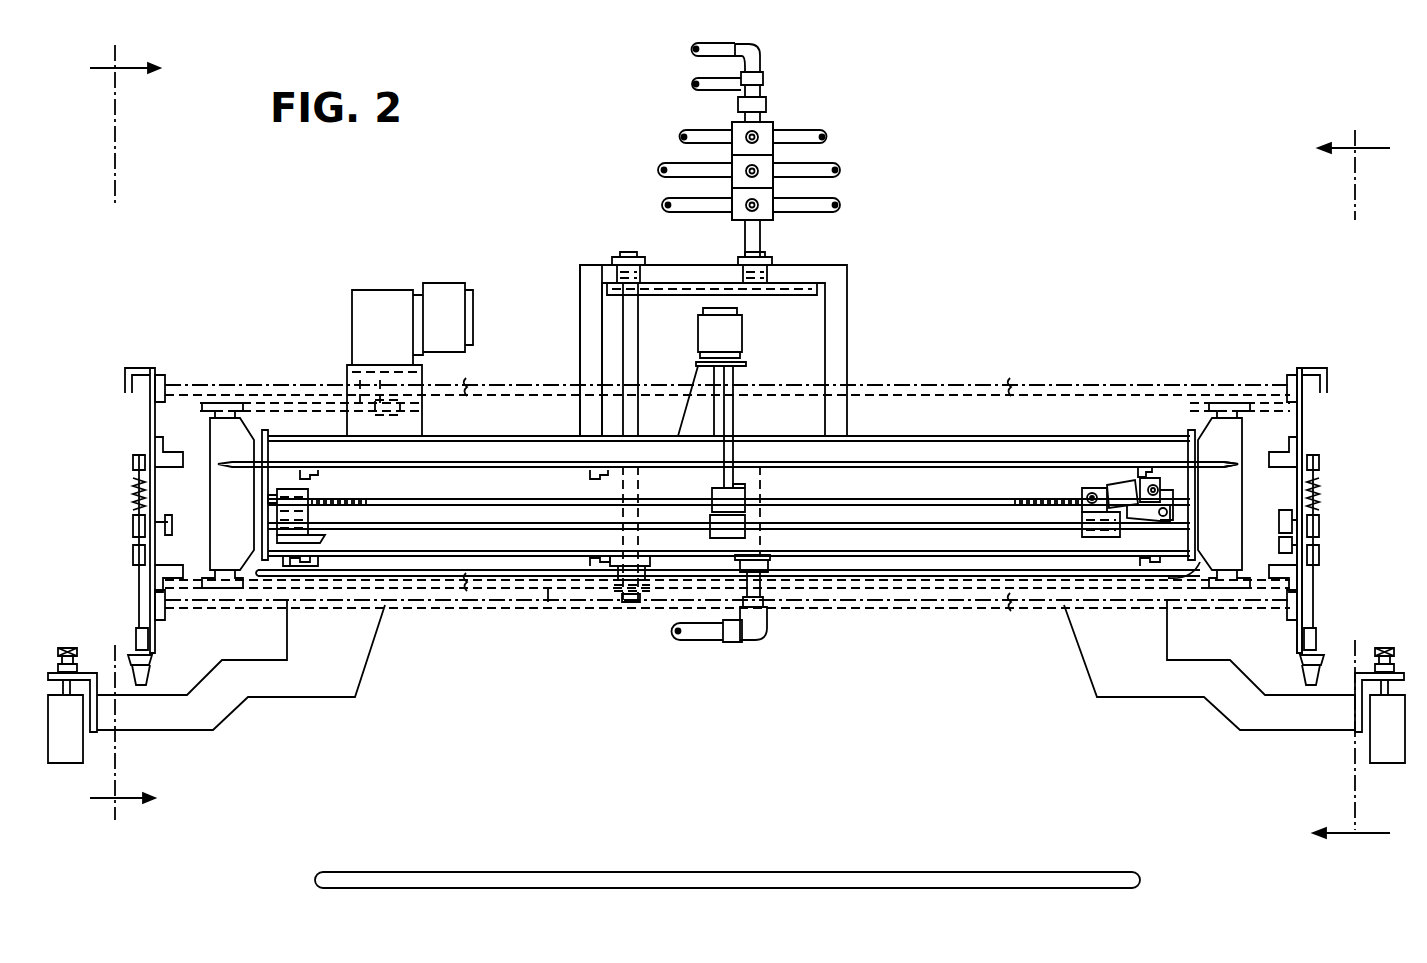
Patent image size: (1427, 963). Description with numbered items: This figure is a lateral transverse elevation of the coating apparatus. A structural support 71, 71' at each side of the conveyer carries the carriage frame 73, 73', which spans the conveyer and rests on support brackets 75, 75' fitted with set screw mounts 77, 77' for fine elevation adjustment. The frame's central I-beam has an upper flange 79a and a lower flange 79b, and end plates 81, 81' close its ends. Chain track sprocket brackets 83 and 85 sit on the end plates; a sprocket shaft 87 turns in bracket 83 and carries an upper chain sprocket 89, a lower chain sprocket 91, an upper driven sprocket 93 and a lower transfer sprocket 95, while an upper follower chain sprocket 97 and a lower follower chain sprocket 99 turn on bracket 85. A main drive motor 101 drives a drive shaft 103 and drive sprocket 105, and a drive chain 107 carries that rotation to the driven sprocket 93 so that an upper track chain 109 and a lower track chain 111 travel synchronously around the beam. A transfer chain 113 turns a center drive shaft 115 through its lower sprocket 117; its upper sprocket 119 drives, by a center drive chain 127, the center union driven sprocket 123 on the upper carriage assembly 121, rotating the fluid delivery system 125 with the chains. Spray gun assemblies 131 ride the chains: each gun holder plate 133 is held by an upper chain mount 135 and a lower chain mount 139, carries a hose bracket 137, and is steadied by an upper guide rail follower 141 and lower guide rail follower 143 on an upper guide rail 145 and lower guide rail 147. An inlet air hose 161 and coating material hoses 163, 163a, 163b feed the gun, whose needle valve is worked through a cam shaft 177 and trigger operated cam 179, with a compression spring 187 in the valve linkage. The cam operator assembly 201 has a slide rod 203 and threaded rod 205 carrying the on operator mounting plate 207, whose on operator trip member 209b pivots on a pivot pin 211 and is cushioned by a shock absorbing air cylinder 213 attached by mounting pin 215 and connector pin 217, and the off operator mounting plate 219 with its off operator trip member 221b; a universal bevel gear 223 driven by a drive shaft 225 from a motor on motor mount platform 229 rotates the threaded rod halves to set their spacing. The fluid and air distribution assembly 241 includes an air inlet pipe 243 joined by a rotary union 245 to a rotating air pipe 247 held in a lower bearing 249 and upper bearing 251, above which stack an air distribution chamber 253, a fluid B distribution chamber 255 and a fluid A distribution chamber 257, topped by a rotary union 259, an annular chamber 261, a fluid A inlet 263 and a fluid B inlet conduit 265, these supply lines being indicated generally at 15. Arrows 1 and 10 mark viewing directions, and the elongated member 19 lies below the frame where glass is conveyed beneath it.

The section line 1- 1 is at (112, 432).
The section line 10- 10 is at (1351, 488).
The fluid supply line 15 is at (775, 33).
The workpiece bar 19 is at (688, 872).
The structural support 71 is at (65, 770).
The structural support 71' is at (1387, 752).
The carriage frame 73 is at (241, 679).
The frame beam 73' is at (1209, 682).
The support bracket 75 is at (73, 666).
The support bracket 75' is at (1368, 685).
The set screw mount 77 is at (64, 657).
The set screw mount 77' is at (1390, 650).
The upper flange 79a is at (1020, 436).
The lower flange 79b is at (938, 558).
The end plate 81 is at (243, 495).
The end plate 81' is at (1173, 456).
The chain track sprocket bracket 83 is at (216, 435).
The chain track sprocket bracket 85 is at (1244, 420).
The sprocket shaft 87 is at (230, 578).
The upper chain sprocket 89 is at (178, 375).
The lower chain sprocket 91 is at (185, 620).
The upper driven sprocket 93 is at (150, 413).
The lower transfer sprocket 95 is at (228, 587).
The upper follower chain sprocket 97 is at (1226, 402).
The lower follower chain sprocket 99 is at (1232, 588).
The main drive motor 101 is at (445, 285).
The drive shaft 103 is at (420, 380).
The drive sprocket 105 is at (410, 418).
The drive chain 107 is at (312, 411).
The upper track chain 109 is at (322, 383).
The lower track chain 111 is at (440, 606).
The transfer chain 113 is at (548, 592).
The center drive shaft 115 is at (630, 340).
The center drive shaft lower sprocket 117 is at (650, 580).
The center drive shaft upper sprocket 119 is at (600, 300).
The upper carriage assembly 121 is at (790, 270).
The center union driven sprocket 123 is at (820, 292).
The fluid delivery system 125 is at (740, 228).
The center drive chain 127 is at (690, 283).
The spray gun assembly 131 is at (1315, 358).
The gun holder plate 133 is at (1302, 418).
The upper chain mount 135 is at (1290, 380).
The hose bracket 137 is at (1306, 367).
The lower chain mount 139 is at (1290, 616).
The upper guide rail follower 141 is at (1292, 455).
The lower guide rail follower 143 is at (1297, 576).
The upper guide rail 145 is at (1222, 446).
The lower guide rail 147 is at (1196, 568).
The inlet air hose 161 is at (828, 211).
The coating material hose 163 is at (806, 135).
The coating material hose 163a is at (700, 135).
The coating material hose 163b is at (838, 178).
The cam shaft 177 is at (1292, 542).
The trigger operated cam 179 is at (1290, 510).
The compression spring 187 is at (1314, 498).
The cam operator assembly 201 is at (880, 497).
The slide rod 203 is at (900, 578).
The threaded rod 205 is at (960, 462).
The on operator mounting plate 207 is at (1086, 532).
The on operator trip member 209b is at (1148, 466).
The pivot pin 211 is at (1172, 515).
The shock absorbing air cylinder 213 is at (1117, 482).
The mounting pin 215 is at (1086, 492).
The connector pin 217 is at (1170, 487).
The off operator mounting plate 219 is at (310, 490).
The off operator trip member 221b is at (325, 541).
The universal bevel gear 223 is at (712, 496).
The drive shaft 225 is at (742, 418).
The motor mount platform 229 is at (702, 372).
The fluid and air distribution assembly 241 is at (850, 152).
The air inlet pipe 243 is at (700, 641).
The rotary union 245 is at (768, 618).
The rotating air pipe 247 is at (766, 483).
The lower bearing 249 is at (770, 560).
The upper bearing 251 is at (766, 258).
The air distribution chamber 253 is at (768, 186).
The fluid B distribution chamber 255 is at (735, 187).
The fluid A distribution chamber 257 is at (735, 150).
The rotary union 259 is at (767, 105).
The annular chamber 261 is at (764, 85).
The fluid inlet 263 is at (700, 84).
The fluid inlet conduit 265 is at (764, 68).